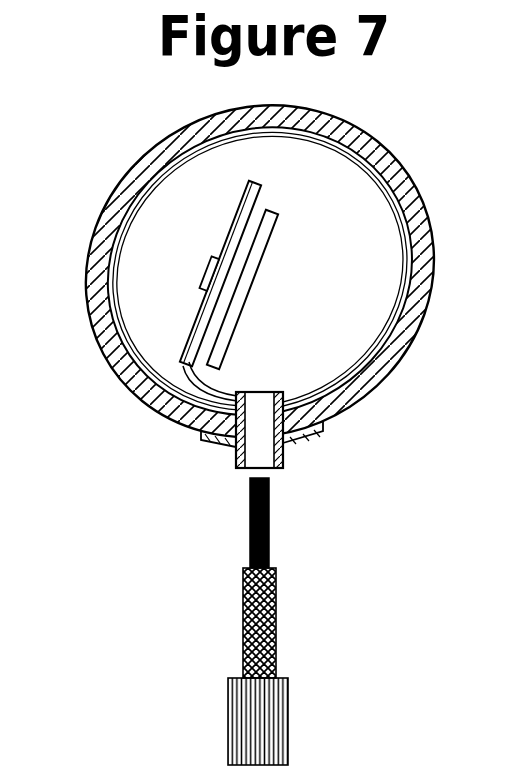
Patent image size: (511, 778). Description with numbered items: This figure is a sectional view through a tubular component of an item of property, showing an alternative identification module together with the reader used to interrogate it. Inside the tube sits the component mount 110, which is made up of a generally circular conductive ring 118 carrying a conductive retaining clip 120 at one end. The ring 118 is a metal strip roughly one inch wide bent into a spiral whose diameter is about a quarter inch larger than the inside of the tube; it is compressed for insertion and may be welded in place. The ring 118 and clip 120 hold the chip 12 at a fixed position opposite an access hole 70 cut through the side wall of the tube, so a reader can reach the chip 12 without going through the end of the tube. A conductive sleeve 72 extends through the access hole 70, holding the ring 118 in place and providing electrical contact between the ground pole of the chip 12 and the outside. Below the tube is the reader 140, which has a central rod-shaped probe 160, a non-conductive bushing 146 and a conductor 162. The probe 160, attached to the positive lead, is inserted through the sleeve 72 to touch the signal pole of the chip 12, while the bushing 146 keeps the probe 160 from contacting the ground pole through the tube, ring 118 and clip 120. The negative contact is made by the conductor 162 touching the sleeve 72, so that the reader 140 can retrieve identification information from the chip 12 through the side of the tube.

The chip 12 is at (270, 205).
The access hole 70 is at (341, 400).
The conductive sleeve 72 is at (290, 456).
The component mount 110 is at (183, 399).
The conductive ring 118 is at (131, 214).
The conductive retaining clip 120 is at (215, 280).
The reader 140 is at (274, 621).
The non-conductive bushing 146 is at (277, 633).
The probe 160 is at (268, 520).
The conductor 162 is at (276, 727).